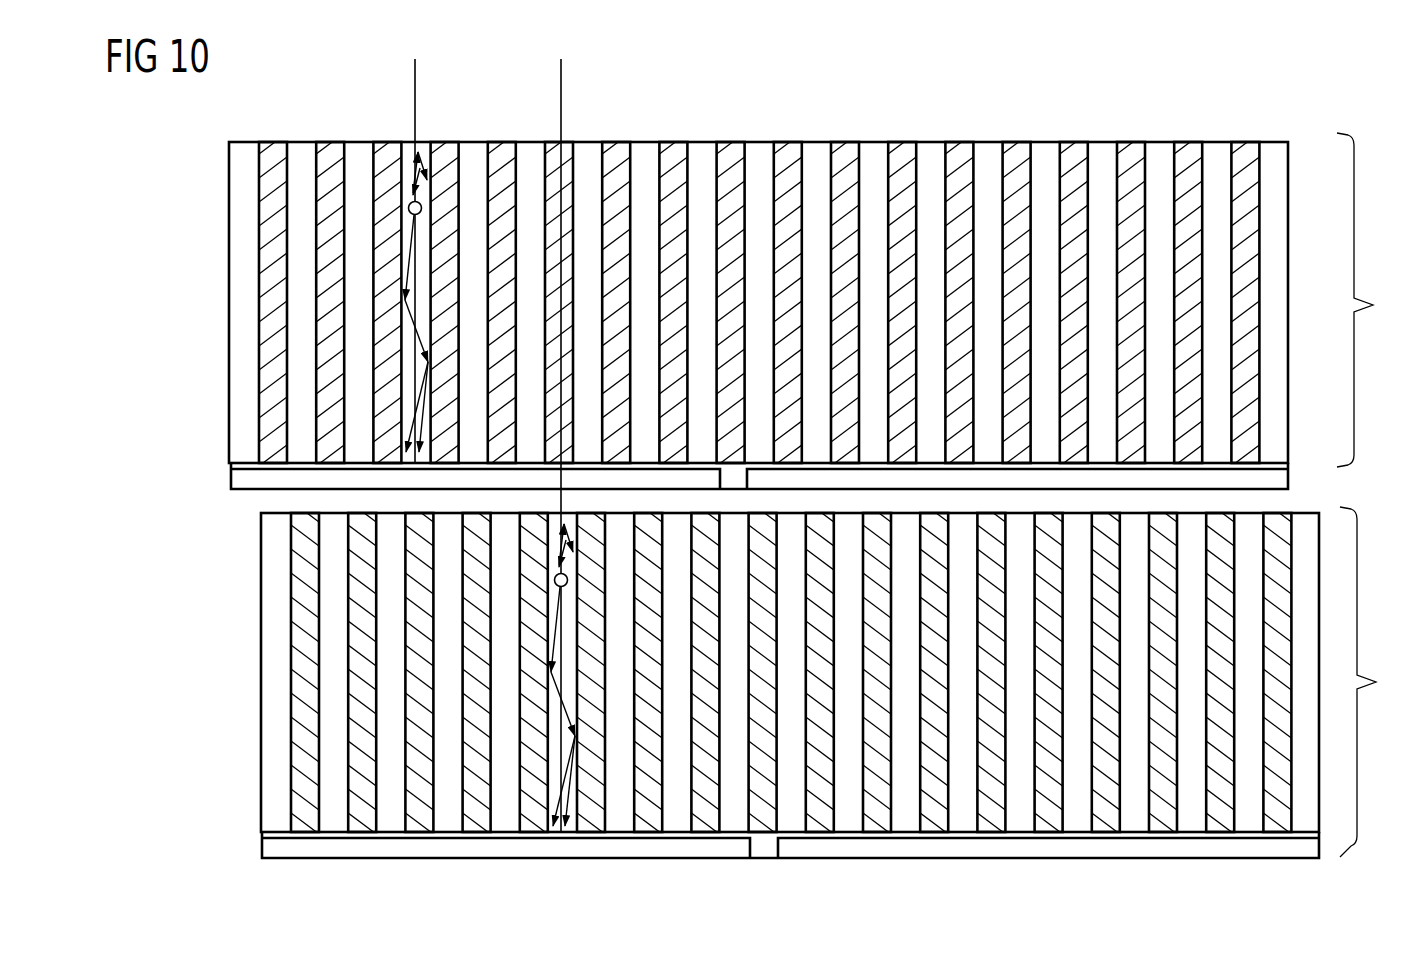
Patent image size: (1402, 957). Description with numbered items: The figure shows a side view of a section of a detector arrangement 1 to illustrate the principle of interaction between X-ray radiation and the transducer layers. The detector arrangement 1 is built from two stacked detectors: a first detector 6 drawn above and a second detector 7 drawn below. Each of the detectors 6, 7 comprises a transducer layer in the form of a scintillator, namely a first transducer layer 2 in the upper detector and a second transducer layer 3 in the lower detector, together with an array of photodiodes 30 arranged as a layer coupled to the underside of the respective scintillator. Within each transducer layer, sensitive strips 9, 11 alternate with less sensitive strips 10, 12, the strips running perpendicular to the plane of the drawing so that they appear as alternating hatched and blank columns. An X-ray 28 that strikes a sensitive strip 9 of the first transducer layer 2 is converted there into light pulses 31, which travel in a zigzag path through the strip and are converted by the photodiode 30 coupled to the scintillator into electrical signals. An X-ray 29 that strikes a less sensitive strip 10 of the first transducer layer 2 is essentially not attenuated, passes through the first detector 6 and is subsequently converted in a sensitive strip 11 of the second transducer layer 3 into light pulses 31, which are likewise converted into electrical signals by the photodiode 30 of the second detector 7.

The detector arrangement 1 is at (1222, 110).
The first transducer layer 2 is at (198, 206).
The second transducer layer 3 is at (228, 578).
The first detector 6 is at (812, 300).
The second detector 7 is at (828, 679).
The sensitive strip 9 is at (941, 493).
The less sensitive strip 10 is at (1031, 493).
The sensitive strip 11 is at (876, 156).
The less sensitive strip 12 is at (1016, 156).
The X-ray 28 is at (418, 89).
The X-ray 29 is at (564, 89).
The photodiode 30 is at (231, 483).
The light pulse 31 is at (410, 244).